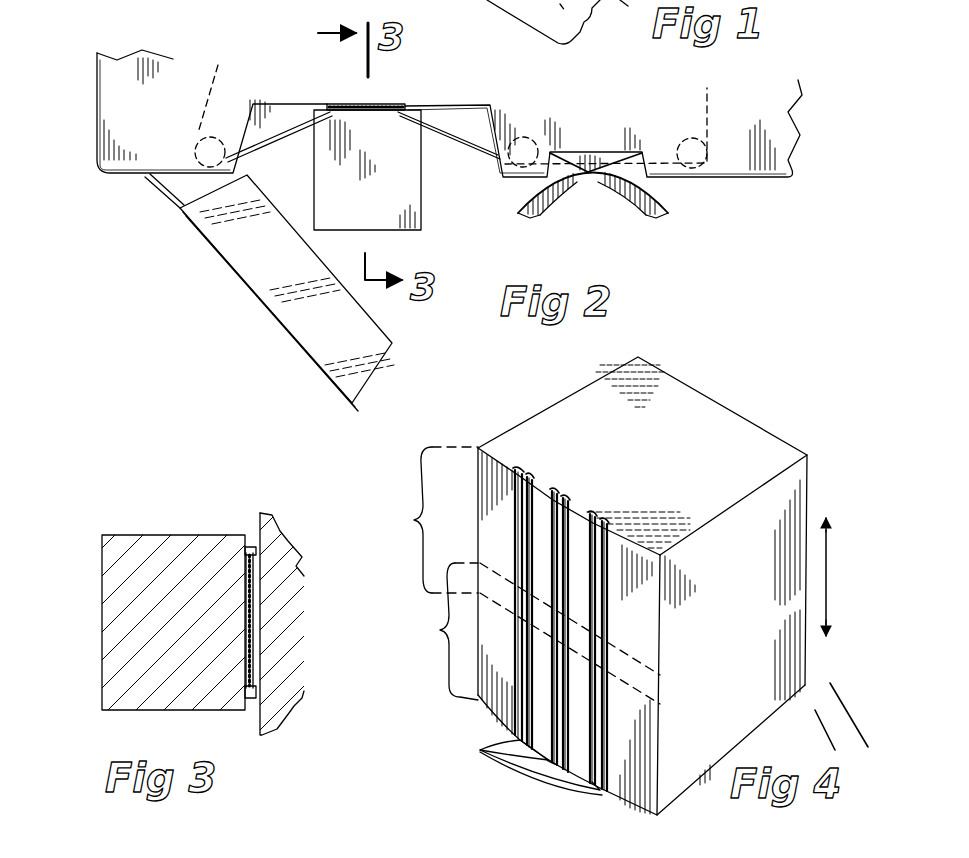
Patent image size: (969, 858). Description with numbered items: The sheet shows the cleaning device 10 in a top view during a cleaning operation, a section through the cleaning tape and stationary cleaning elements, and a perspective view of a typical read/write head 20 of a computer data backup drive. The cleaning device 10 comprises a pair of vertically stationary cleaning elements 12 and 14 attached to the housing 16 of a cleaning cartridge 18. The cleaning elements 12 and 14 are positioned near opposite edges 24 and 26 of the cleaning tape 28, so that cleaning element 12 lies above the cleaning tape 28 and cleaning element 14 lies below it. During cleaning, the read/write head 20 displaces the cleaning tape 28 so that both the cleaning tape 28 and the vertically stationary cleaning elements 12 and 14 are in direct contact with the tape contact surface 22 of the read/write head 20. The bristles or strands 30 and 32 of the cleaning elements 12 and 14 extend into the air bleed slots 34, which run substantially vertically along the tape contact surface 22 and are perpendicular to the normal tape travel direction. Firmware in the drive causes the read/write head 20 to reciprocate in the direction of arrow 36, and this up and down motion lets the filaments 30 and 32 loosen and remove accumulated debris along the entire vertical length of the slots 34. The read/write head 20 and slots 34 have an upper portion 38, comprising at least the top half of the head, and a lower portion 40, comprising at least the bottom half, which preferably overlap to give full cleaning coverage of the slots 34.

In FIG. 2, the cleaning device 10 is at (136, 199).
In FIG. 2, the vertically stationary cleaning element 12 is at (327, 102).
In FIG. 3, the vertically stationary cleaning element 12 is at (252, 540).
In FIG. 3, the vertically stationary cleaning element 14 is at (254, 703).
In FIG. 2, the housing 16 is at (123, 60).
In FIG. 3, the housing 16 is at (287, 555).
In FIG. 2, the cleaning cartridge 18 is at (107, 178).
In FIG. 3, the cleaning cartridge 18 is at (296, 525).
In FIG. 2, the read/write head 20 is at (424, 232).
In FIG. 3, the read/write head 20 is at (99, 534).
In FIG. 4, the read/write head 20 is at (750, 422).
In FIG. 2, the tape contact surface 22 is at (333, 112).
In FIG. 3, the tape contact surface 22 is at (255, 650).
In FIG. 4, the tape contact surface 22 is at (497, 695).
In FIG. 3, the edge 24 is at (260, 562).
In FIG. 3, the edge 26 is at (264, 686).
In FIG. 2, the cleaning tape 28 is at (465, 132).
In FIG. 3, the cleaning tape 28 is at (260, 620).
In FIG. 2, the filaments or strands 30 is at (408, 104).
In FIG. 3, the filaments or strands 30 is at (249, 554).
In FIG. 3, the filaments or strands 32 is at (247, 690).
In FIG. 2, the air bleed slots 34 is at (328, 113).
In FIG. 3, the air bleed slots 34 is at (247, 548).
In FIG. 4, the air bleed slots 34 is at (480, 751).
In FIG. 4, the arrow 36 is at (826, 598).
In FIG. 4, the upper portion 38 is at (414, 520).
In FIG. 4, the lower portion 40 is at (440, 630).